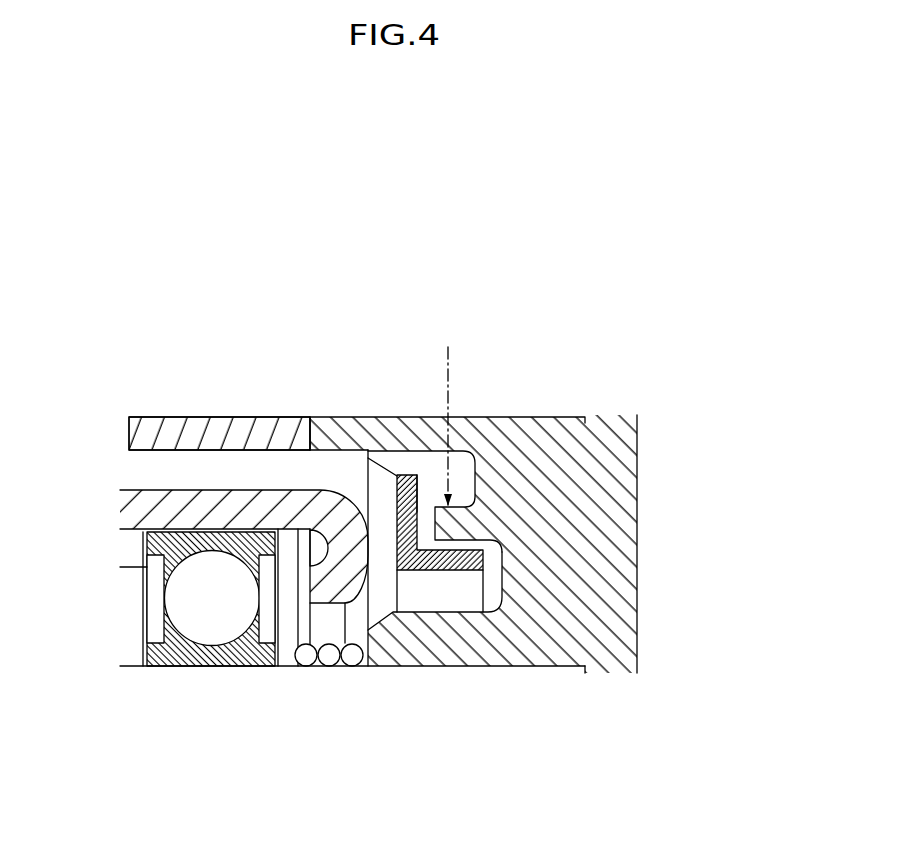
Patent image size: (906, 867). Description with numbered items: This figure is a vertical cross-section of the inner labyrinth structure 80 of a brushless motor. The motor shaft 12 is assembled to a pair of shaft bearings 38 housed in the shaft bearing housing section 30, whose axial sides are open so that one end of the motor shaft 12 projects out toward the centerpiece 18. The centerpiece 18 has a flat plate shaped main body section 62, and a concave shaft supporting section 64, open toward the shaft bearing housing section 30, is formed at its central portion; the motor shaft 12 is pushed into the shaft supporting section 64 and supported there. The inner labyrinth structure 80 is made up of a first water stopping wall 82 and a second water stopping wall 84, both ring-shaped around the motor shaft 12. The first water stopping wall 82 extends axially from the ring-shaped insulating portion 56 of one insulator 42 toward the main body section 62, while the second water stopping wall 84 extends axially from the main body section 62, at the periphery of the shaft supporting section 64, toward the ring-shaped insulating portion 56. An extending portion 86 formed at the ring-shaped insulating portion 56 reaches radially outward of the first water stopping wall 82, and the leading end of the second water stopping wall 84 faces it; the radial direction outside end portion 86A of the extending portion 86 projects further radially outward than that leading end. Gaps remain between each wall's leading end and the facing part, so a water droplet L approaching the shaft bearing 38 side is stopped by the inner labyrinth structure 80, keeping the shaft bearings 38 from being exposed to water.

The motor shaft 12 is at (137, 666).
The centerpiece 18 is at (637, 440).
The shaft bearing housing section 30 is at (145, 490).
The shaft bearing 38 is at (147, 552).
The insulator 42 is at (447, 371).
The ring-shaped insulating portion 56 is at (410, 418).
The main body section 62 is at (637, 618).
The shaft supporting section 64 is at (425, 612).
The inner labyrinth structure 80 is at (542, 470).
The first water stopping wall 82 is at (448, 568).
The second water stopping wall 84 is at (462, 503).
The extending portion 86 is at (435, 449).
The radial direction outside end portion 86A is at (421, 490).
The water droplet L is at (448, 358).